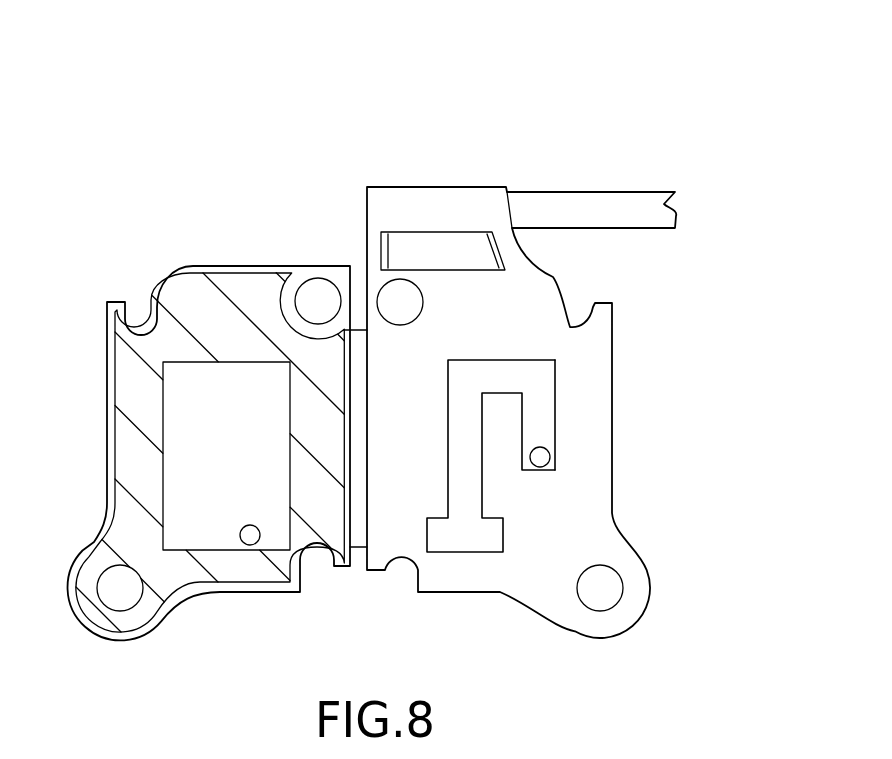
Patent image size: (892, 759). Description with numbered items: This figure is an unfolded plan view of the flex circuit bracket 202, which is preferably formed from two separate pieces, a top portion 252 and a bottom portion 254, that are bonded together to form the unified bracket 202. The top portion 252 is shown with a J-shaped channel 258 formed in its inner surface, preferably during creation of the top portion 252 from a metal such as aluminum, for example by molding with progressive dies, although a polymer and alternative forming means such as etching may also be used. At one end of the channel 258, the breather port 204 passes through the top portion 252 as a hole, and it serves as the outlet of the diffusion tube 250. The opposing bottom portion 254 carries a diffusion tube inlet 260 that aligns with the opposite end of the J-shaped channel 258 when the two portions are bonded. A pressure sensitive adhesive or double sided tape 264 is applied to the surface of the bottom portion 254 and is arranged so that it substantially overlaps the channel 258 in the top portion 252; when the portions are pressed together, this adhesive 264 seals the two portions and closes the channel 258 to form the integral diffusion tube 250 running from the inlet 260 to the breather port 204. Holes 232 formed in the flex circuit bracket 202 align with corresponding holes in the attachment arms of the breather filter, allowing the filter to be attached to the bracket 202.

The flex circuit bracket 202 is at (230, 128).
The breather port 204 is at (541, 458).
The holes 232 is at (598, 588).
The diffusion tube 250 is at (537, 345).
The top portion 252 is at (500, 593).
The bottom portion 254 is at (170, 607).
The J-shaped channel 258 is at (555, 395).
The diffusion tube inlet 260 is at (260, 534).
The pressure sensitive adhesive or double sided tape 264 is at (128, 378).